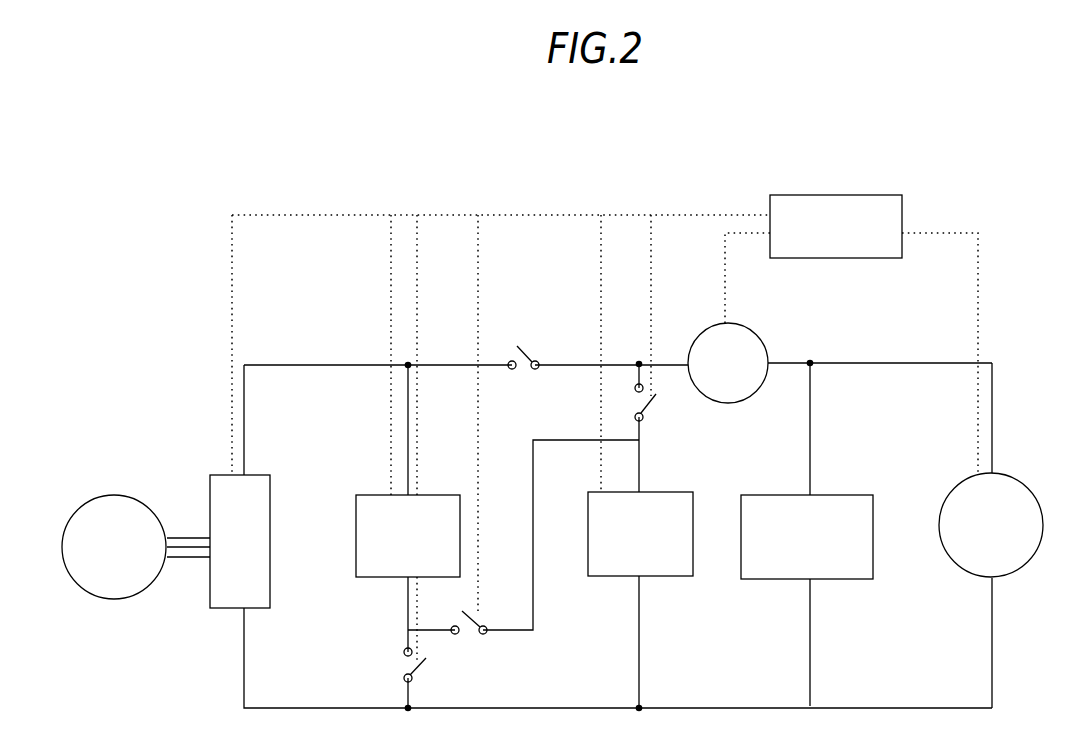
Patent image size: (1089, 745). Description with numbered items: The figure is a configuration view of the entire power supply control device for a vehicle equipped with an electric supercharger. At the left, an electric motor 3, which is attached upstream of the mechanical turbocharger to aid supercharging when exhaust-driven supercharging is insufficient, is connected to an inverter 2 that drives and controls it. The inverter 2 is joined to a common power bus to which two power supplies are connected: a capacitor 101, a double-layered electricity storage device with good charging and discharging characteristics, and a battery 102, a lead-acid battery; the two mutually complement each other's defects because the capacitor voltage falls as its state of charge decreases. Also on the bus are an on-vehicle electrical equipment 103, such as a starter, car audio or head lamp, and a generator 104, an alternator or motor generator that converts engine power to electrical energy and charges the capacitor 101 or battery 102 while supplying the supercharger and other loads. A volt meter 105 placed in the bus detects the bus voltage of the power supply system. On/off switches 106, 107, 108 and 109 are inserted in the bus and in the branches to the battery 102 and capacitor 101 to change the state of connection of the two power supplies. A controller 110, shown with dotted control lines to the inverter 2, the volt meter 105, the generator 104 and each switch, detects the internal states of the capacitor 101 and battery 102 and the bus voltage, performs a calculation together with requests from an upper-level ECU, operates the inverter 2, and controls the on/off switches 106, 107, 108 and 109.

The inverter 2 is at (210, 490).
The electric motor 3 is at (105, 497).
The capacitor 101 is at (356, 497).
The battery 102 is at (693, 503).
The on-vehicle electrical equipment 103 is at (873, 512).
The generator 104 is at (1017, 482).
The volt meter 105 is at (759, 336).
The on/off switch 106 is at (648, 401).
The on/off switch 107 is at (472, 634).
The on/off switch 108 is at (414, 671).
The on/off switch 109 is at (529, 370).
The controller 110 is at (902, 213).